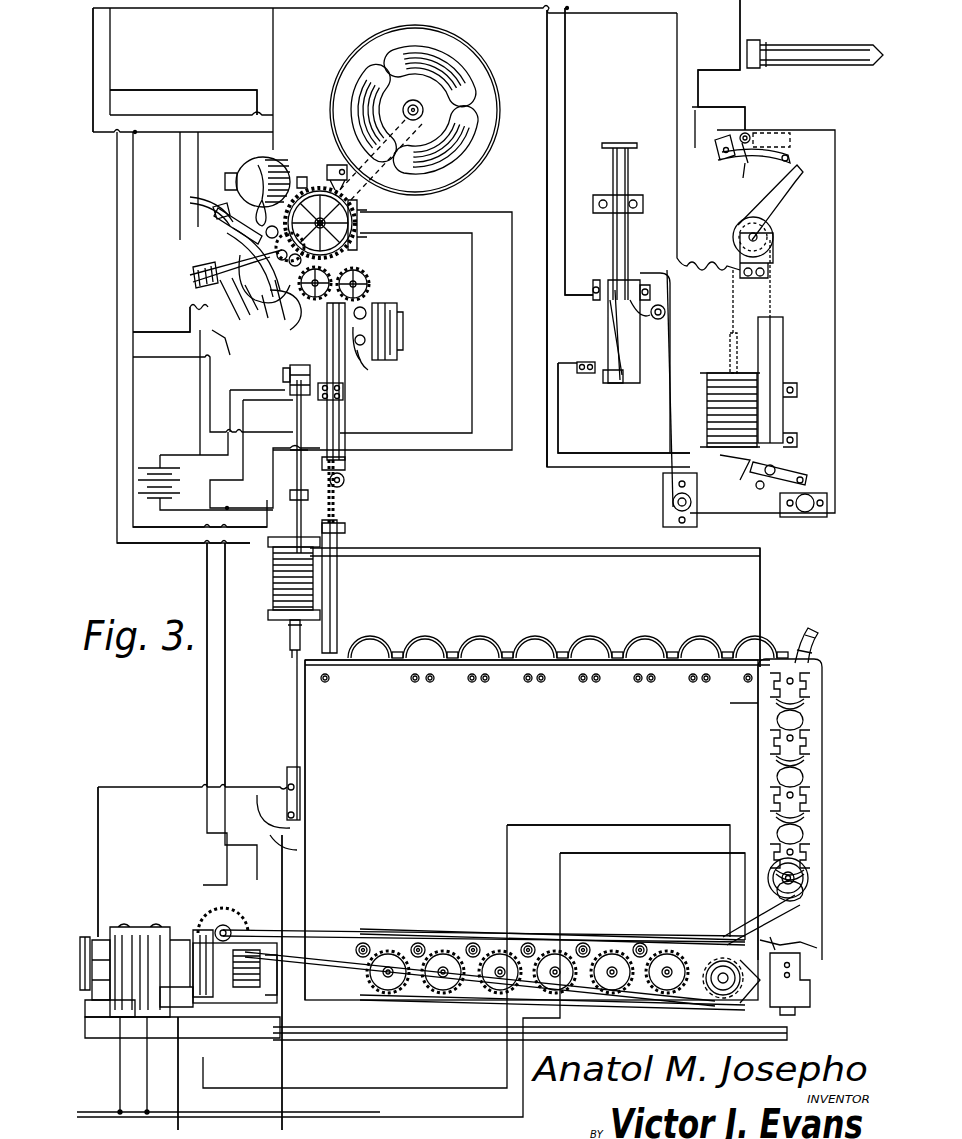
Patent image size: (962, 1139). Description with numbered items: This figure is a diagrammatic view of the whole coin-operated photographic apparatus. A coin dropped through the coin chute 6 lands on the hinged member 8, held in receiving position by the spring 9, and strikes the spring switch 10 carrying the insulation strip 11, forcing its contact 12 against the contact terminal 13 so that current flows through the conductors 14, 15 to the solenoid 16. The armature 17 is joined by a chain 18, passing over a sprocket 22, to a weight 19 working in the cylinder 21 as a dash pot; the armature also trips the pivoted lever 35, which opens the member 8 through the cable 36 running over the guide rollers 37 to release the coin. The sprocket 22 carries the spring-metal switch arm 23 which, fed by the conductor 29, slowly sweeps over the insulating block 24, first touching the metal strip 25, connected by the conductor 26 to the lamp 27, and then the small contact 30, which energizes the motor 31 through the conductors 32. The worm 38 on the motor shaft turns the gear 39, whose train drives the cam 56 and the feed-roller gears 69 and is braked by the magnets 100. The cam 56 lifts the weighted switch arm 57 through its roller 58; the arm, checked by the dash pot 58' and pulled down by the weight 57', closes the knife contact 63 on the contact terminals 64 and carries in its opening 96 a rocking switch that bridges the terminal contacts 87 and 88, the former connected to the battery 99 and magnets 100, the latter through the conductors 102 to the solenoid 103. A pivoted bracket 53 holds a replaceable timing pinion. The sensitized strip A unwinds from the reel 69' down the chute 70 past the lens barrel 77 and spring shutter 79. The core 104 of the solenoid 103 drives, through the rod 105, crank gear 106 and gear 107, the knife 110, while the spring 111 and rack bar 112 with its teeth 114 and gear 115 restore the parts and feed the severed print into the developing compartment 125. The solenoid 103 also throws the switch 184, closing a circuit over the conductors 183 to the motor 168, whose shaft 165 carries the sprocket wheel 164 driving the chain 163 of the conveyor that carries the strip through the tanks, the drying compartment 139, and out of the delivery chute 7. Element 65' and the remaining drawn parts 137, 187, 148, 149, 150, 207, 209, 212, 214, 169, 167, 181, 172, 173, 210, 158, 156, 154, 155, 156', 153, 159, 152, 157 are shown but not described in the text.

The conductors 32 is at (200, 90).
The strip of sensitized material A is at (360, 100).
The reel 69' is at (431, 113).
The conductor 29 is at (618, 12).
The conductor 14 is at (568, 78).
The conductor 15 is at (547, 165).
The coin chute 6 is at (620, 142).
The lamp 27 is at (818, 44).
The conductor 26 is at (718, 72).
The block of insulating material 24 is at (768, 142).
The metal strip 25 is at (790, 148).
The small contact 30 is at (745, 172).
The switch arm 23 is at (778, 205).
The sprocket 22 is at (775, 256).
The chain 18 is at (775, 284).
The weight 19 is at (782, 340).
The armature 17 is at (730, 345).
The solenoid 16 is at (760, 430).
The cylinder 21 is at (785, 405).
The pivoted lever 35 is at (785, 472).
The guide rollers 37 is at (666, 313).
The spring 9 is at (650, 293).
The hinged member 8 is at (628, 355).
The spring switch 10 is at (603, 337).
The strip of insulation material 11 is at (625, 380).
The contact 12 is at (583, 373).
The contact terminal 13 is at (575, 453).
The cable 36 is at (668, 420).
The motor 31 is at (275, 160).
The worm 38 is at (318, 186).
The gear 39 is at (357, 205).
The magnets 100 is at (367, 237).
The cam 56 is at (330, 275).
The gears 69 is at (379, 282).
The dash pot 58' is at (204, 208).
The arm 65' is at (210, 246).
The contact terminals 64 is at (225, 248).
The terminal contacts 87 is at (195, 277).
The weight 57' is at (184, 278).
The knife contact 63 is at (220, 290).
The opening 96 is at (203, 340).
The switch arm 57 is at (251, 316).
The roller 58 is at (280, 310).
The pivoted bracket 53 is at (290, 335).
The terminal contacts 88 is at (230, 357).
The knife 110 is at (305, 345).
The spring shutter 79 is at (390, 310).
The lens barrel 77 is at (376, 368).
The gear 107 is at (358, 358).
The crank gear 106 is at (344, 392).
The rack bar 112 is at (345, 422).
The switch 184 is at (293, 400).
The gear 115 is at (345, 475).
The teeth 114 is at (348, 485).
The rod 105 is at (338, 488).
The core 104 is at (345, 527).
The battery 99 is at (155, 470).
The conductors 102 is at (144, 545).
The chute 70 is at (338, 560).
The spring 111 is at (316, 598).
The solenoid 103 is at (290, 620).
The developing compartment 125 is at (485, 703).
The cells 137 is at (380, 638).
The conductor 187 is at (762, 575).
The delivery chute 7 is at (816, 637).
The terminals 148 is at (812, 683).
The contacts 149 is at (805, 718).
The drying compartment 139 is at (812, 745).
The conductor 150 is at (665, 842).
The conductors 183 is at (222, 735).
The contact 207 is at (285, 768).
The conductor 209 is at (298, 850).
The conductor 212 is at (92, 938).
The contact 214 is at (105, 945).
The motor 168 is at (132, 940).
The armature 169 is at (180, 950).
The sprocket wheel 164 is at (200, 930).
The pulley 167 is at (228, 920).
The motor 181 is at (248, 1003).
The conductor 172 is at (195, 1010).
The conductor 173 is at (222, 1010).
The base 210 is at (110, 1010).
The shaft 165 is at (250, 935).
The roller 158 is at (363, 943).
The chain 163 is at (442, 930).
The rollers 156 is at (529, 931).
The sprockets 154 is at (615, 970).
The rail 155 is at (390, 985).
The roller 156' is at (640, 1008).
The belt 153 is at (745, 900).
The pulley 159 is at (795, 885).
The lever 152 is at (805, 945).
The motor 157 is at (812, 992).